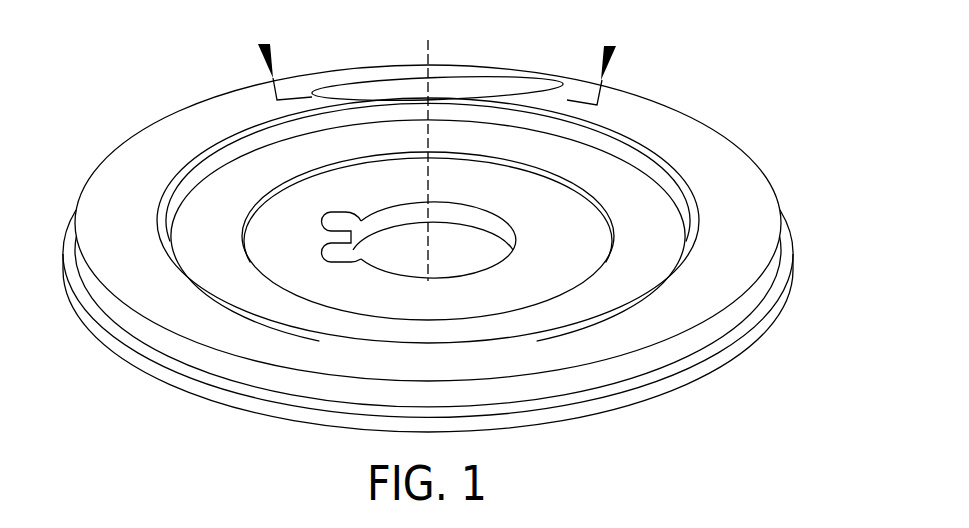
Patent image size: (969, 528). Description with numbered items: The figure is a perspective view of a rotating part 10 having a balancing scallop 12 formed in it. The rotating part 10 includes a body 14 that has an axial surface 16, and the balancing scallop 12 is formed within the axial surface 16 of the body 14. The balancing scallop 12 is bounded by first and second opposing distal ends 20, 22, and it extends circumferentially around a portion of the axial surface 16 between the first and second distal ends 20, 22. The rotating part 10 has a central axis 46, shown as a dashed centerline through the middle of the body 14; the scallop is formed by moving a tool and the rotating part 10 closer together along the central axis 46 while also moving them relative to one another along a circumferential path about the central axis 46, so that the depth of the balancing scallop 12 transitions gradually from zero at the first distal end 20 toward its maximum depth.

The rotating part 10 is at (110, 90).
The balancing scallop 12 is at (413, 78).
The body 14 is at (783, 260).
The axial surface 16 is at (720, 168).
The first distal end 20 is at (311, 90).
The second distal end 22 is at (572, 84).
The central axis 46 is at (429, 236).